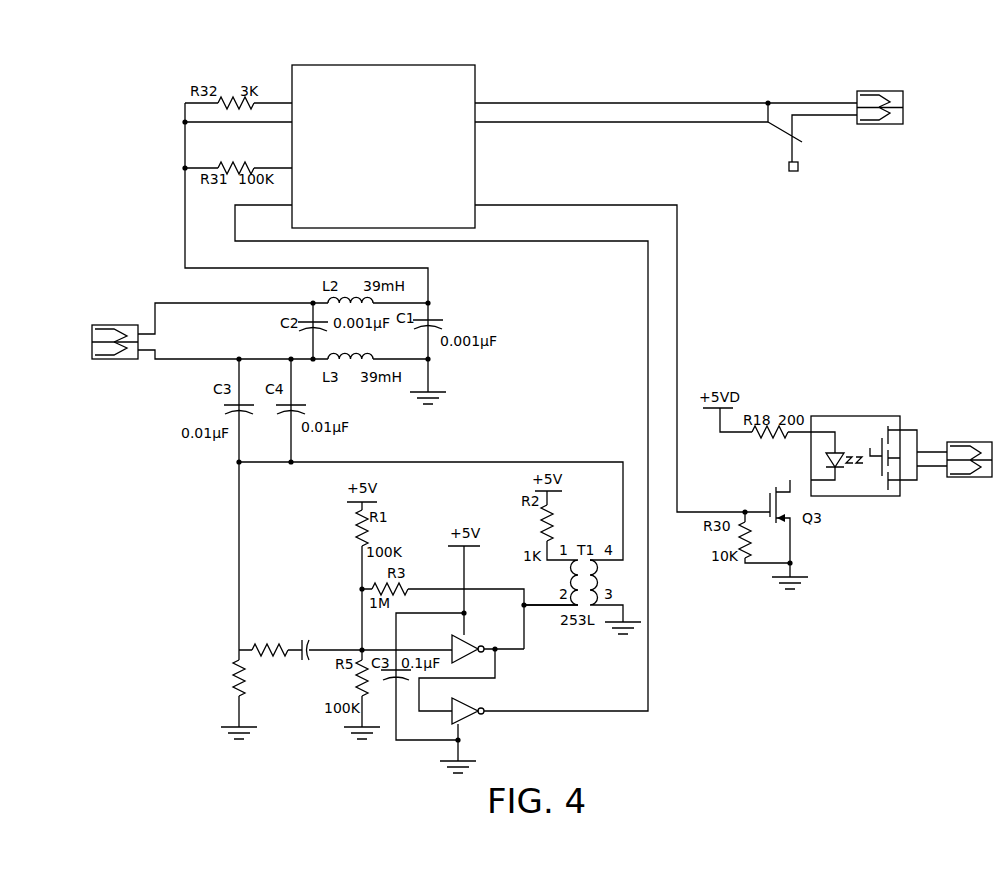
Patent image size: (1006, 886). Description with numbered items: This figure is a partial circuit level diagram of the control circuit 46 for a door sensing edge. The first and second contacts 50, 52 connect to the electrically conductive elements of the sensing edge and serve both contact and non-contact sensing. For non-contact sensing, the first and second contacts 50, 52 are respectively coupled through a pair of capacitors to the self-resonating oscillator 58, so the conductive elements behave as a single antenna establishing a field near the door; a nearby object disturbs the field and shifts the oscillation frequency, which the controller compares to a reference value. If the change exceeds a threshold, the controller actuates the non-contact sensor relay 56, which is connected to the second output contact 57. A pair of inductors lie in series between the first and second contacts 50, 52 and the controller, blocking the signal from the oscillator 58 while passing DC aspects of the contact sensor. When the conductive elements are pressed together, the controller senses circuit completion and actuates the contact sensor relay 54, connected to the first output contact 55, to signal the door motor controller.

The control circuit 46 is at (647, 136).
The first contact 50 is at (205, 351).
The second contact 52 is at (104, 319).
The contact sensor relay 54 is at (821, 156).
The first output contact 55 is at (887, 130).
The non-contact sensor relay 56 is at (859, 480).
The second output contact 57 is at (960, 480).
The self-resonating oscillator 58 is at (316, 600).